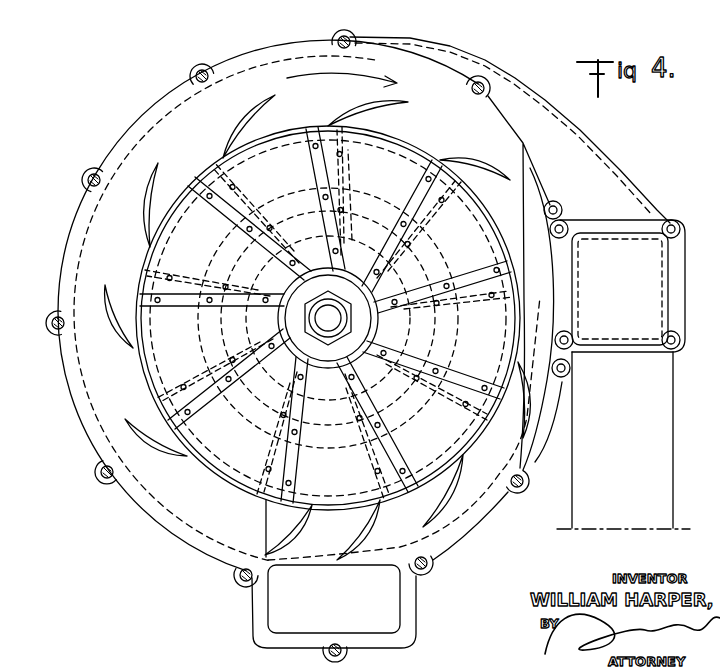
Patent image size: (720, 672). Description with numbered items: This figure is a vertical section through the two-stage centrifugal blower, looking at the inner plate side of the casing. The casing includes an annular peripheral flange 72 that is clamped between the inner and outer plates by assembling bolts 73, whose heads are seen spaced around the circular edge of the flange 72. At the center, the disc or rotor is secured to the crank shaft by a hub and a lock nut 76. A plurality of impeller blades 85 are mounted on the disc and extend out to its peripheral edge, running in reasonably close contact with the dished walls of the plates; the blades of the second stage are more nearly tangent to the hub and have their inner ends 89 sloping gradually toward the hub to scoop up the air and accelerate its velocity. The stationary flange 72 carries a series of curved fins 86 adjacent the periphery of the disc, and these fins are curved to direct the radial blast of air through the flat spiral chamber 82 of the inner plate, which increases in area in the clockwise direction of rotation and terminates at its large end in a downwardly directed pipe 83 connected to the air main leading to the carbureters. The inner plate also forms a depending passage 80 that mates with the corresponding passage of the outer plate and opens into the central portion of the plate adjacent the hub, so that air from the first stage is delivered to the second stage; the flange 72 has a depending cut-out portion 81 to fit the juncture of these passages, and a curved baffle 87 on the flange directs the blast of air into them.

The annular peripheral flange 72 is at (153, 528).
The assembling bolts 73 is at (56, 313).
The lock nut 76 is at (305, 322).
The depending passage 80 is at (273, 403).
The depending cut-out portion 81 is at (258, 603).
The flat spiral chamber 82 is at (465, 63).
The downwardly directed pipe 83 is at (658, 413).
The impeller blades 85 is at (213, 202).
The curved fins 86 is at (232, 150).
The curved baffle 87 is at (283, 513).
The inner ends of second-stage blades 89 is at (352, 218).